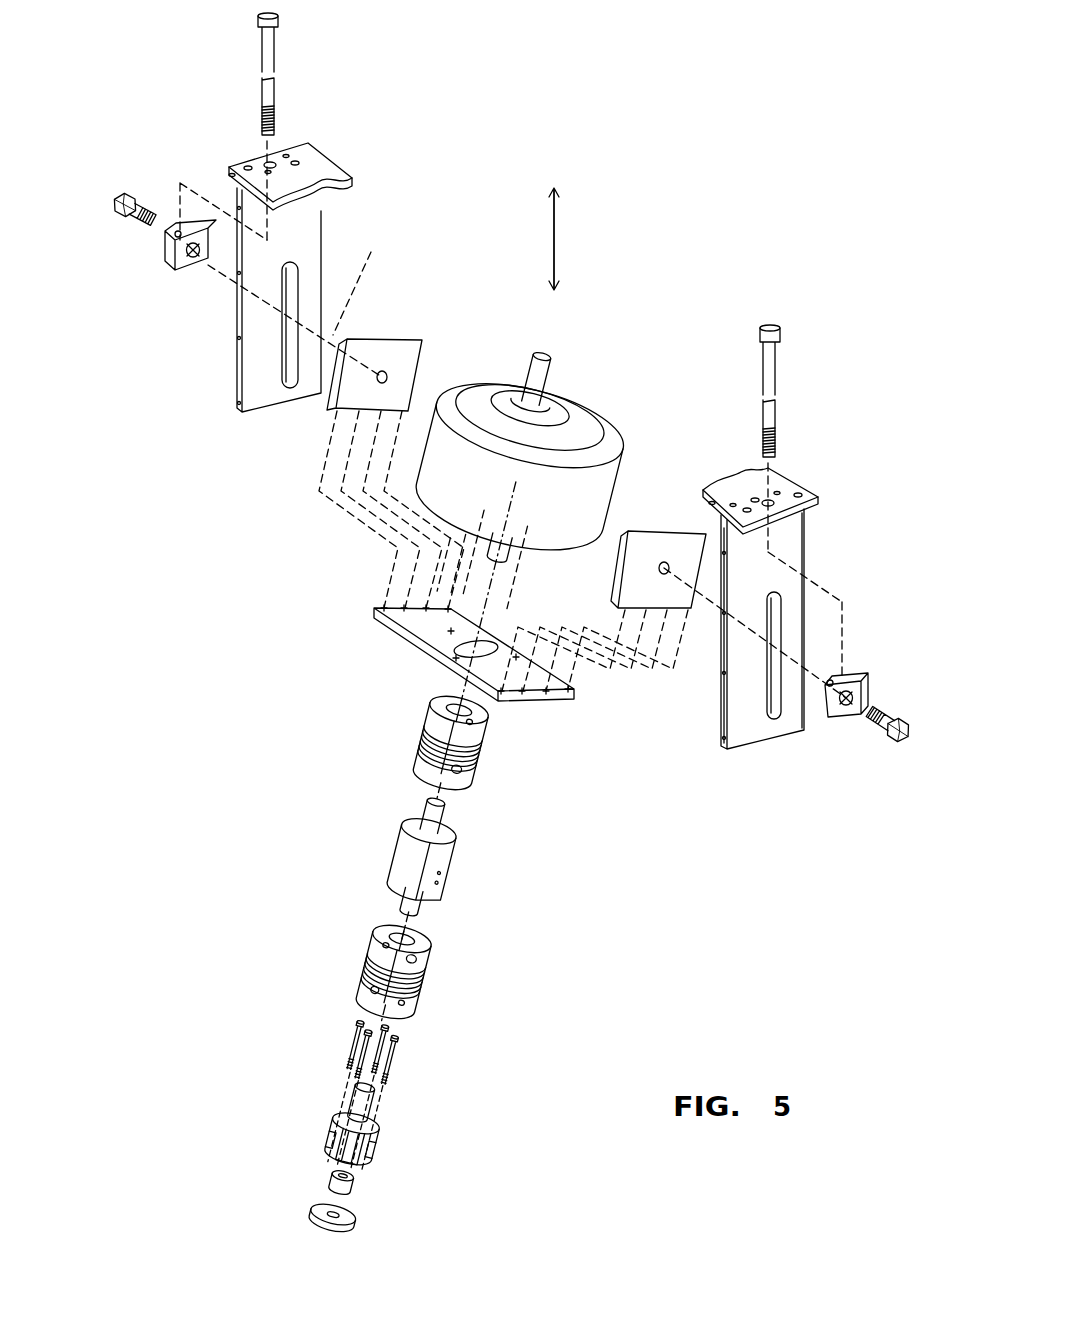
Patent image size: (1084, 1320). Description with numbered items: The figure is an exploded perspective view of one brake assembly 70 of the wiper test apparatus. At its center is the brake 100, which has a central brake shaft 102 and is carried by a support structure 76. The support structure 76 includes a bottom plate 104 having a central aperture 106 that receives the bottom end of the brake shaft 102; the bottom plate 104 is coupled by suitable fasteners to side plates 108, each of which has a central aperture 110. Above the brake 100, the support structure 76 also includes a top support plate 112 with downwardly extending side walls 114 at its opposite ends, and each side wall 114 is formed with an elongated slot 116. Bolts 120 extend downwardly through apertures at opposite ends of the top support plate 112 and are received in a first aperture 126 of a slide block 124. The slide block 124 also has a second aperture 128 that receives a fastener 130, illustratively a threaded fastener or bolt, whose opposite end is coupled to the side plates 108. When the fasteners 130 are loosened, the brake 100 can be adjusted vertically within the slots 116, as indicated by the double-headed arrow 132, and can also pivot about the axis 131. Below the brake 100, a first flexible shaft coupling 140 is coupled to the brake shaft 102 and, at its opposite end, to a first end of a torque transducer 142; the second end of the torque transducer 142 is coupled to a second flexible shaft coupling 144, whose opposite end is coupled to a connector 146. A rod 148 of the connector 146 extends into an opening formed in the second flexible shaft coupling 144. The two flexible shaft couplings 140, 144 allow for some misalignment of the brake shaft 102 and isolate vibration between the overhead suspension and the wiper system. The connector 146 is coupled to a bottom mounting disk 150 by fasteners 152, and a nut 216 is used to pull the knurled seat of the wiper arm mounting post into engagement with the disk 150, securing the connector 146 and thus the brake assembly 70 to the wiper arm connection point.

The brake assembly 70 is at (728, 209).
The support structure 76 is at (812, 520).
The brake 100 is at (606, 440).
The brake shaft 102 is at (497, 538).
The bottom plate 104 is at (423, 616).
The central aperture 106 is at (455, 637).
The side plate 108 is at (400, 347).
The central aperture 110 is at (375, 364).
The top support plate 112 is at (312, 162).
The side wall 114 is at (779, 540).
The elongated slot 116 is at (773, 720).
The bolt 120 is at (263, 42).
The slide block 124 is at (163, 272).
The first aperture 126 is at (172, 225).
The second aperture 128 is at (183, 249).
The fastener 130 is at (140, 196).
The axis 131 is at (313, 300).
The double-headed arrow 132 is at (546, 227).
The first flexible shaft coupling 140 is at (505, 756).
The torque transducer 142 is at (362, 833).
The second flexible shaft coupling 144 is at (433, 969).
The connector 146 is at (391, 1131).
The rod 148 is at (343, 1097).
The disk 150 is at (304, 1208).
The fasteners 152 is at (329, 1023).
The nut 216 is at (347, 1176).